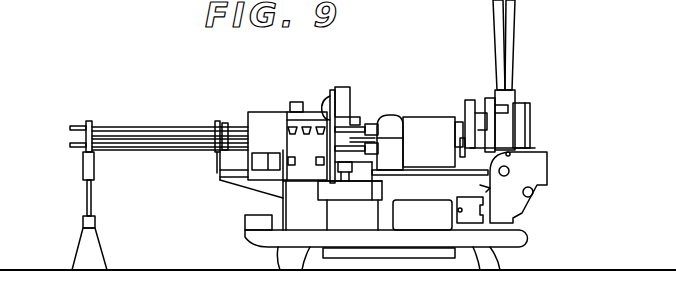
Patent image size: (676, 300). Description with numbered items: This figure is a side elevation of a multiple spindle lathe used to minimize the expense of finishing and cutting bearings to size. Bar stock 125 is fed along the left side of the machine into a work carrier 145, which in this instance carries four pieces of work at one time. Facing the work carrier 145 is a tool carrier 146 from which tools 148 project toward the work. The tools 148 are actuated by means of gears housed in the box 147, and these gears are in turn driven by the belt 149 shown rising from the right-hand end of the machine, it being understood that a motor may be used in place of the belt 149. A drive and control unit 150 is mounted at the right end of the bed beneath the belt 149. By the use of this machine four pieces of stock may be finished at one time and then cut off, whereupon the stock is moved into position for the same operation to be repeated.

The rods 125 is at (122, 148).
The work carrier 145 is at (298, 120).
The tool carrier 146 is at (393, 122).
The box 147 is at (428, 128).
The tools 148 is at (361, 126).
The belt 149 is at (517, 58).
The control mechanism 150 is at (532, 147).